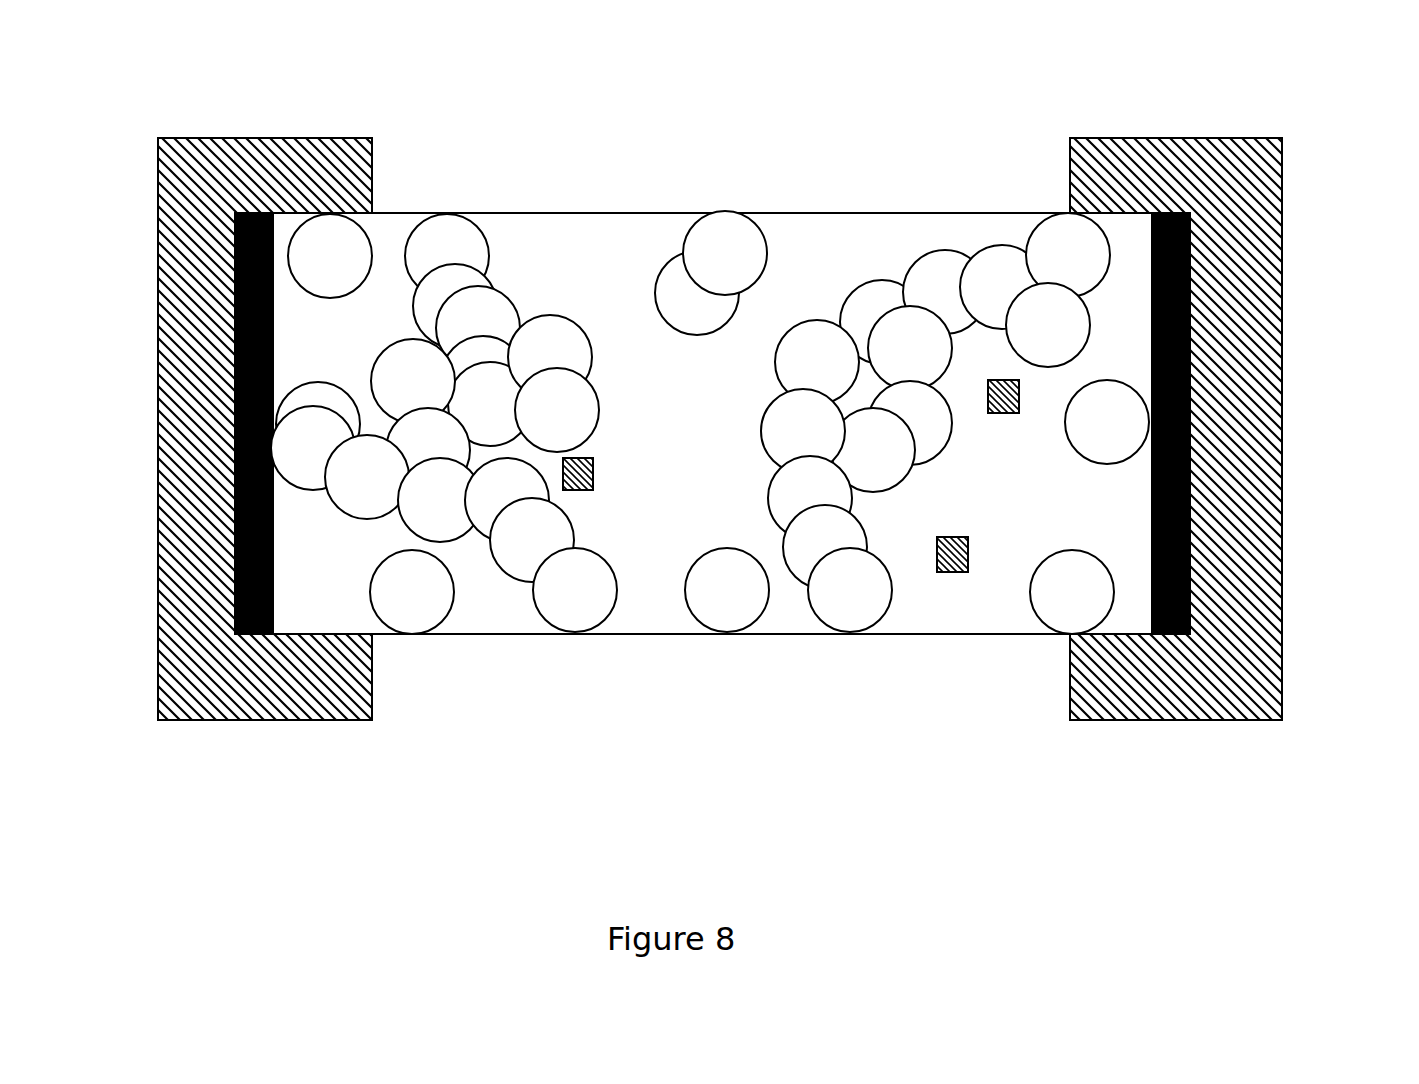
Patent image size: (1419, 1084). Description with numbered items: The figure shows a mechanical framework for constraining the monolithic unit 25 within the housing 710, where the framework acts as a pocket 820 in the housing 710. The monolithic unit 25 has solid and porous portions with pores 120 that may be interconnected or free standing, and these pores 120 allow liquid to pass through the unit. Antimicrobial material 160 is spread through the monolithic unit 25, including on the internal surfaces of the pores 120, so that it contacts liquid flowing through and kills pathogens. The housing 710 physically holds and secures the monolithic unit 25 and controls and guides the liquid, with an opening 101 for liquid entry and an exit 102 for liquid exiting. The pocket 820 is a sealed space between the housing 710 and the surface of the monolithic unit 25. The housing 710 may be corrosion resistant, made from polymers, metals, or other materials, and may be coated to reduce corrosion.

The opening 101 is at (733, 438).
The housing 710 is at (203, 203).
The pocket 820 is at (233, 502).
The exit 102 is at (535, 702).
The pores 120 is at (728, 612).
The monolithic unit 25 is at (710, 496).
The antimicrobial material 160 is at (960, 573).